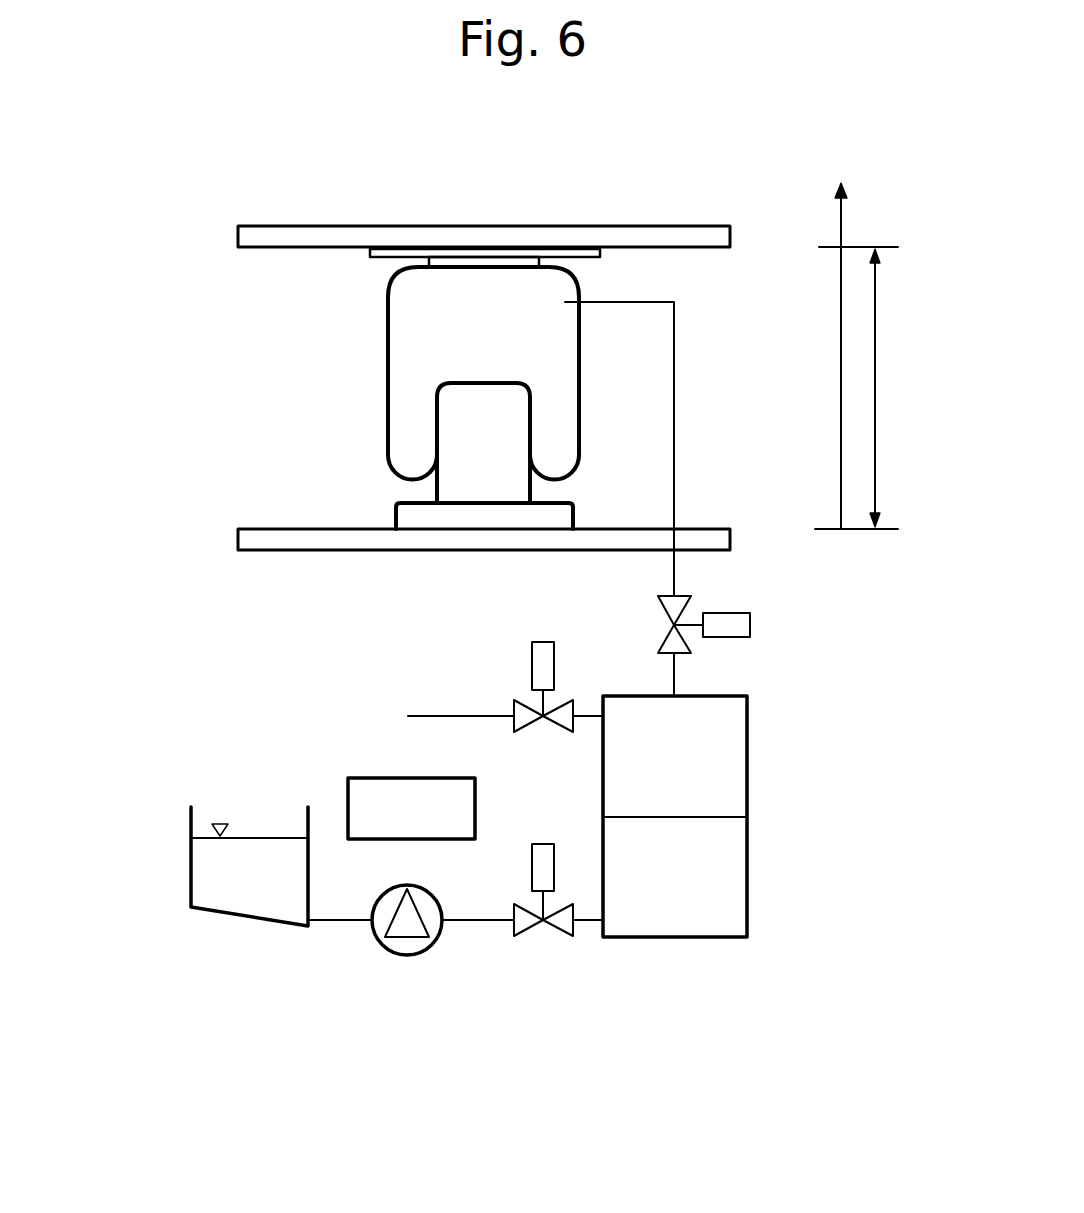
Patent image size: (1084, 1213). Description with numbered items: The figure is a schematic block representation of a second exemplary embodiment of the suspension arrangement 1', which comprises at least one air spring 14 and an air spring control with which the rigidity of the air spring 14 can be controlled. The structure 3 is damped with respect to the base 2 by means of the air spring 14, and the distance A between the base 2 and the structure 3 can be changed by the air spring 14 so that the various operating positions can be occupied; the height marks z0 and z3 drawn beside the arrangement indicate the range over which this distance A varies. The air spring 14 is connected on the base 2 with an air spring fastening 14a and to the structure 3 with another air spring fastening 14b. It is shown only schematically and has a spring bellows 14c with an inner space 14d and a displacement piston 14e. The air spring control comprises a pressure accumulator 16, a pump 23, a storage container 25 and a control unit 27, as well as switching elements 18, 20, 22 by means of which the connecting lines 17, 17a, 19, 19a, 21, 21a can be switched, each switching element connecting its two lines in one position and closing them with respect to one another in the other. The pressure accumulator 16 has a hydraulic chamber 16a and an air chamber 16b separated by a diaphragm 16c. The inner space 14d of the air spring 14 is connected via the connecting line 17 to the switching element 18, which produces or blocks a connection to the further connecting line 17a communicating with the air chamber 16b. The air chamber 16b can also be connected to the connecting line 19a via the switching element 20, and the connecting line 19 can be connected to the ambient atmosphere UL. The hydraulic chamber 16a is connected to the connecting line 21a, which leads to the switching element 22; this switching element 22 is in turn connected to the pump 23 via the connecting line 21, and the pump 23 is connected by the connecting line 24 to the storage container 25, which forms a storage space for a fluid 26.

The suspension arrangement 1' is at (387, 132).
The base 2 is at (260, 542).
The structure 3 is at (636, 238).
The air spring 14 is at (380, 308).
The air spring fastening 14a is at (413, 516).
The air spring fastening 14b is at (493, 260).
The spring bellows 14c is at (388, 390).
The inner space 14d is at (418, 328).
The displacement piston 14e is at (485, 428).
The pressure accumulator 16 is at (662, 950).
The hydraulic chamber 16a is at (722, 866).
The air chamber 16b is at (703, 757).
The diaphragm 16c is at (693, 815).
The connecting line 17 is at (674, 387).
The connecting line 17a is at (677, 677).
The switching element 18 is at (750, 613).
The connecting line 19 is at (487, 712).
The connecting line 19a is at (587, 716).
The switching element 20 is at (529, 642).
The connecting line 21 is at (468, 925).
The connecting line 21a is at (590, 925).
The switching element 22 is at (545, 842).
The pump 23 is at (393, 948).
The connecting line 24 is at (340, 925).
The storage container 25 is at (180, 872).
The fluid 26 is at (246, 858).
The control unit 27 is at (368, 795).
The ambient atmosphere UL is at (389, 716).
The lower height position z0 is at (851, 511).
The upper height position z3 is at (847, 356).
The distance A is at (897, 440).